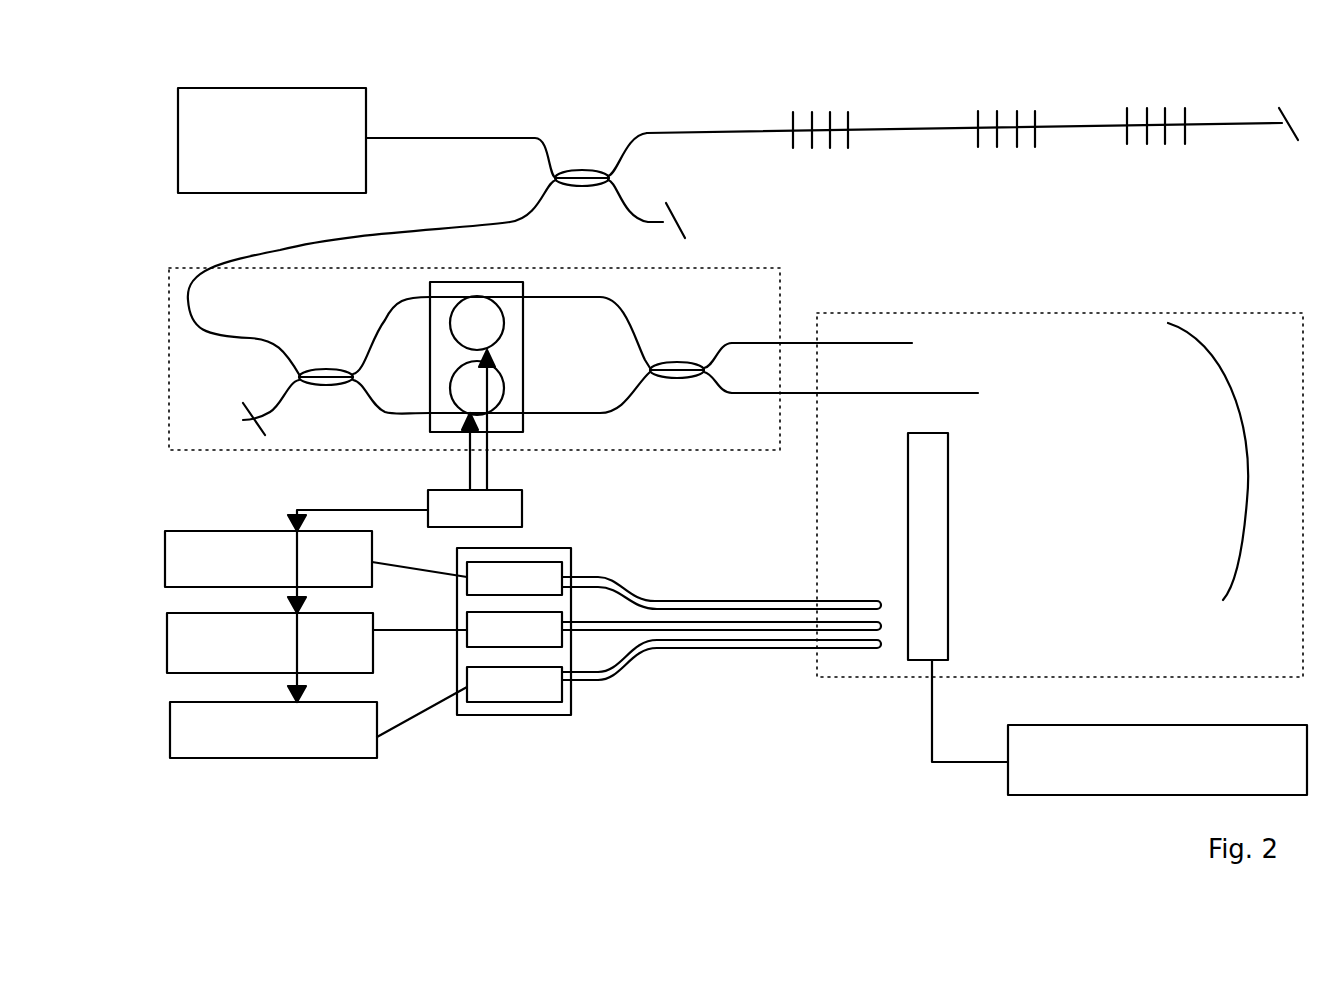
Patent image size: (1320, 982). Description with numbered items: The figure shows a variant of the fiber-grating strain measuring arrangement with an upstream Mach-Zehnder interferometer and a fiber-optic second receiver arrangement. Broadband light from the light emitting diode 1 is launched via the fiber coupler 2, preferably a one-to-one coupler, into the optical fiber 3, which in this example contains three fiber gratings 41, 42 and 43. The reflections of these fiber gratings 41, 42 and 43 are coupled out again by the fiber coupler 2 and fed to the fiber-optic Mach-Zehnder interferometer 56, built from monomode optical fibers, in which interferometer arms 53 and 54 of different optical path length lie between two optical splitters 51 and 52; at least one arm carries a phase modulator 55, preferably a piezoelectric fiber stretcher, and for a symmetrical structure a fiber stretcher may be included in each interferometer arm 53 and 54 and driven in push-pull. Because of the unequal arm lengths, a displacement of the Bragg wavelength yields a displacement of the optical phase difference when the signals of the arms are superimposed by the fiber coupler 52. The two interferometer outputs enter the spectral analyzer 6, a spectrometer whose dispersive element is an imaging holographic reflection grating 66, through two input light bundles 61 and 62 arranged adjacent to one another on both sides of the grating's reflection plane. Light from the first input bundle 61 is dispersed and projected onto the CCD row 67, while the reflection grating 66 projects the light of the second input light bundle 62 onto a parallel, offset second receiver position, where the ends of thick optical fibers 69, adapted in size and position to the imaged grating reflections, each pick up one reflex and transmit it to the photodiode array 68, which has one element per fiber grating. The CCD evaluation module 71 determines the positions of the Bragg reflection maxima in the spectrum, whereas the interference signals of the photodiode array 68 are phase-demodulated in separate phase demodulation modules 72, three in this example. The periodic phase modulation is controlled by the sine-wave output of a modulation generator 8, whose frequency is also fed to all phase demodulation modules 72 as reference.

The light emitting diode 1 is at (367, 108).
The fiber coupler 2 is at (584, 170).
The optical fiber 3 is at (701, 133).
The fiber grating 41 is at (833, 115).
The fiber grating 42 is at (1018, 113).
The fiber grating 43 is at (1167, 111).
The optical splitter 51 is at (323, 373).
The optical splitter 52 is at (686, 362).
The interferometer arm 53 is at (638, 338).
The interferometer arm 54 is at (552, 412).
The phase modulator 55 is at (498, 382).
The Mach-Zehnder interferometer 56 is at (782, 327).
The spectral analyzer 6 is at (1100, 308).
The input light bundle 61 is at (885, 338).
The input light bundle 62 is at (930, 388).
The reflection grating 66 is at (1223, 360).
The CCD row 67 is at (930, 602).
The photodiode array 68 is at (533, 717).
The optical fibers 69 is at (857, 640).
The CCD evaluation module 71 is at (1063, 760).
The phase demodulation module 72 is at (207, 740).
The modulation generator 8 is at (500, 505).